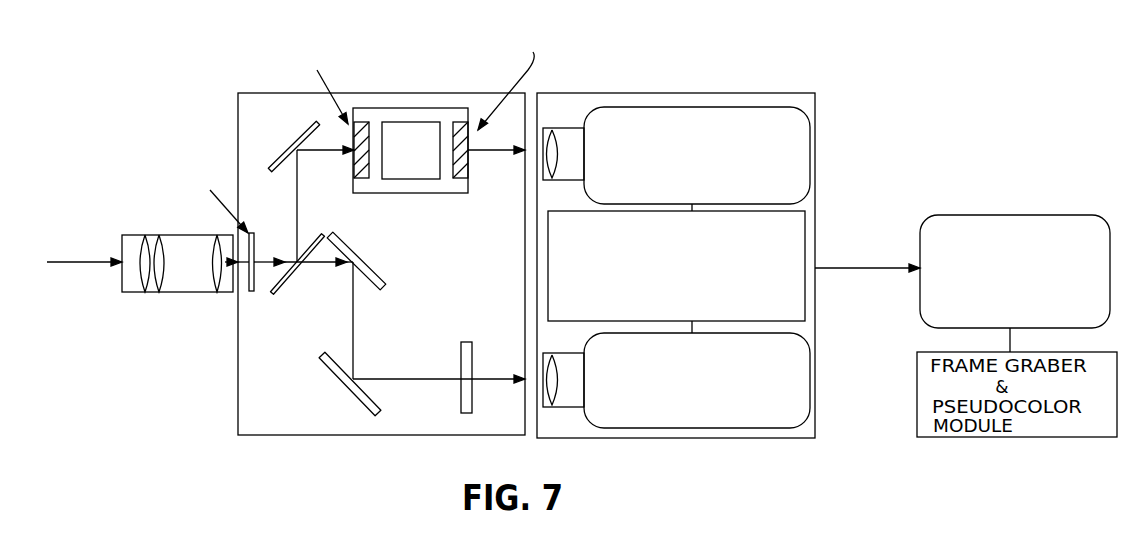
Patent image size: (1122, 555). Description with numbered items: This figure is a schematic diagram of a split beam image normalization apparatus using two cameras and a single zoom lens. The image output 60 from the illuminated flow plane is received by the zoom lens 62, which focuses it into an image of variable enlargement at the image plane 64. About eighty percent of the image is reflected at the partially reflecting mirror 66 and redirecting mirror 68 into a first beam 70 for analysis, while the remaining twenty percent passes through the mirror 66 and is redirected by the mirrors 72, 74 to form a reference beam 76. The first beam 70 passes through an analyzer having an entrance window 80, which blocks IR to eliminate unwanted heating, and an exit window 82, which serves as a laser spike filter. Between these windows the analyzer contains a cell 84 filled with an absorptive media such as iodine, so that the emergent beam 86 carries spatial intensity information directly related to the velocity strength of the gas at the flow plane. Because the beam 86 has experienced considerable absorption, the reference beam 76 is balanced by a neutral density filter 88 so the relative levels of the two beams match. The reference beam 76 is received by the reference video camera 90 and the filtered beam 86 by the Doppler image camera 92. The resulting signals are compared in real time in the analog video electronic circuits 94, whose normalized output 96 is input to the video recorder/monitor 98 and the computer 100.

The image output 60 is at (72, 262).
The zoom lens 62 is at (123, 294).
The image plane 64 is at (257, 237).
The partially reflecting mirror 66 is at (291, 271).
The redirecting mirror 68 is at (276, 161).
The first beam 70 is at (324, 150).
The mirror 72 is at (372, 243).
The mirror 74 is at (334, 372).
The reference beam 76 is at (399, 378).
The entrance window 80 is at (353, 169).
The exit window 82 is at (469, 176).
The cell 84 is at (411, 148).
The emergent beam 86 is at (487, 151).
The neutral density filter 88 is at (473, 352).
The reference video camera 90 is at (783, 406).
The Doppler image camera 92 is at (783, 146).
The analog video electronic circuits 94 is at (788, 241).
The normalized output 96 is at (833, 268).
The video recorder/monitor 98 is at (1101, 250).
The computer 100 is at (1102, 303).